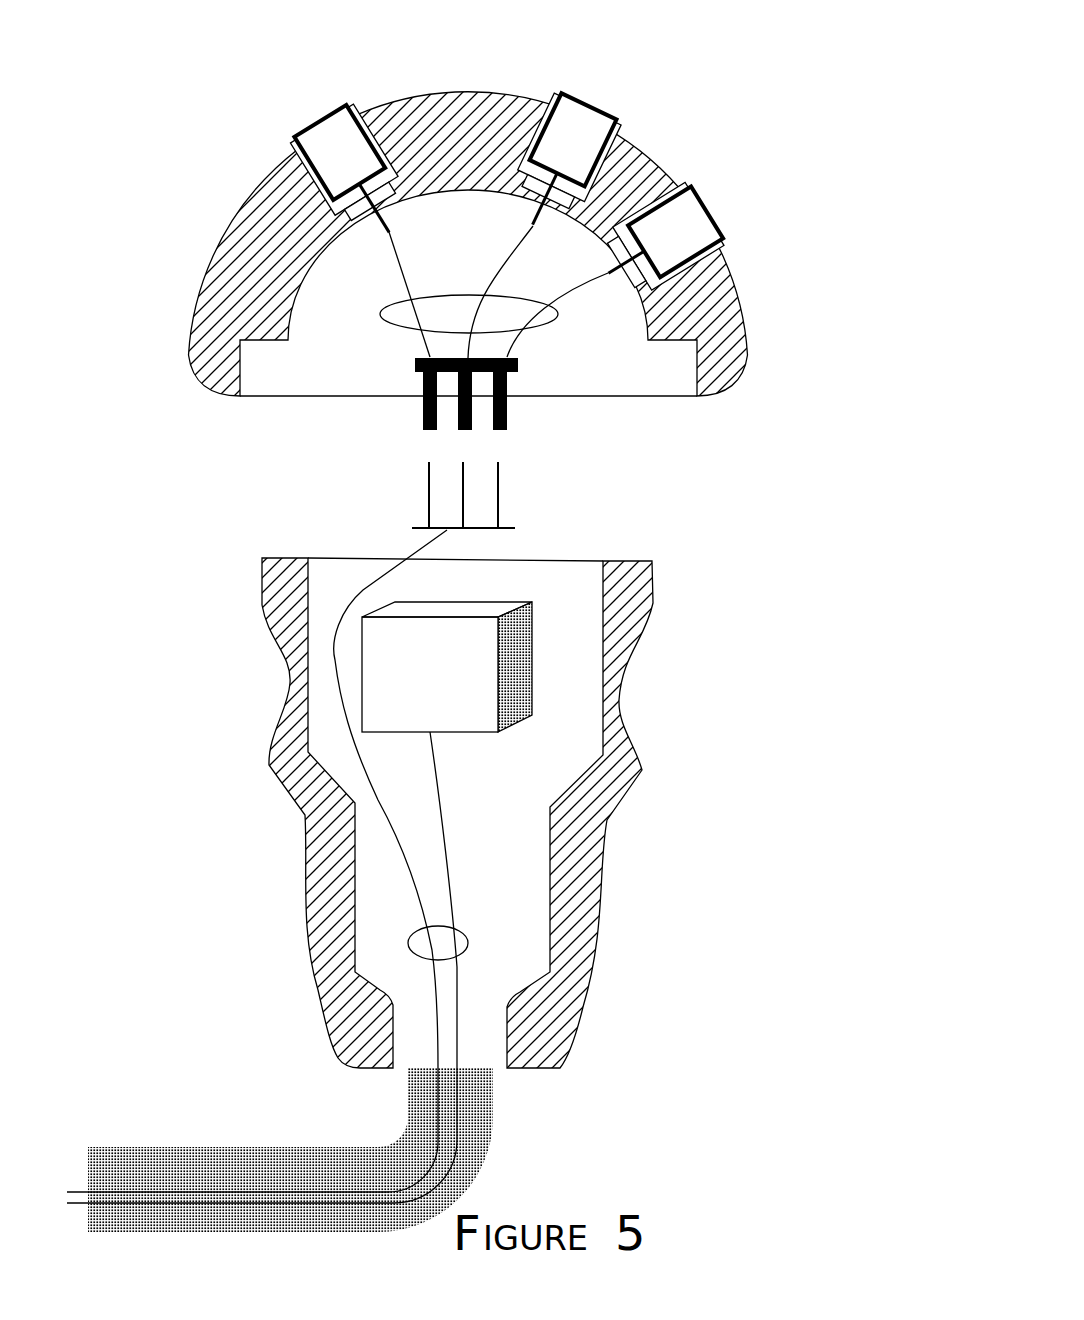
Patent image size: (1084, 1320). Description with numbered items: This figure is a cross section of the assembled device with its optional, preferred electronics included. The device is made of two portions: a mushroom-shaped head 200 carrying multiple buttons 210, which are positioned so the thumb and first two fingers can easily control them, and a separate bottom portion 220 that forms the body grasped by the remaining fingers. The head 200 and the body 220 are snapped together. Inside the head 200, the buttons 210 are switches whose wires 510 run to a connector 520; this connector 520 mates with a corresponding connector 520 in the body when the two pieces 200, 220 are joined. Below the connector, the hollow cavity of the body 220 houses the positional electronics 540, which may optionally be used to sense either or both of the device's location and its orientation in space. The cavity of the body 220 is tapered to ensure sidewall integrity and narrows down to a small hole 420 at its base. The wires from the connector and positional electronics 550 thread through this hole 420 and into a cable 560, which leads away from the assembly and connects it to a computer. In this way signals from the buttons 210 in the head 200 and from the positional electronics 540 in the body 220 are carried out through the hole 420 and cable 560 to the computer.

The mushroom-shaped head 200 is at (728, 295).
The buttons 210 is at (320, 121).
The bottom portion 220 is at (305, 810).
The small hole 420 is at (470, 1043).
The wires 510 is at (400, 319).
The connector 520 is at (507, 418).
The positional electronics 540 is at (487, 685).
The wires from the connector and positional electronics 550 is at (410, 953).
The cable 560 is at (477, 1137).